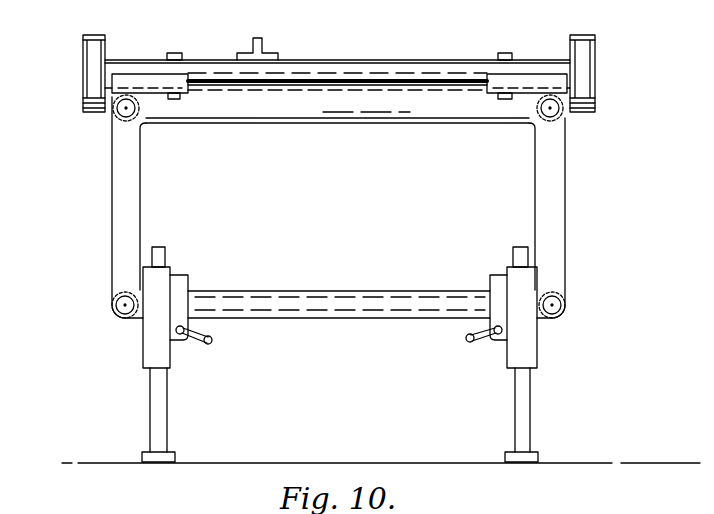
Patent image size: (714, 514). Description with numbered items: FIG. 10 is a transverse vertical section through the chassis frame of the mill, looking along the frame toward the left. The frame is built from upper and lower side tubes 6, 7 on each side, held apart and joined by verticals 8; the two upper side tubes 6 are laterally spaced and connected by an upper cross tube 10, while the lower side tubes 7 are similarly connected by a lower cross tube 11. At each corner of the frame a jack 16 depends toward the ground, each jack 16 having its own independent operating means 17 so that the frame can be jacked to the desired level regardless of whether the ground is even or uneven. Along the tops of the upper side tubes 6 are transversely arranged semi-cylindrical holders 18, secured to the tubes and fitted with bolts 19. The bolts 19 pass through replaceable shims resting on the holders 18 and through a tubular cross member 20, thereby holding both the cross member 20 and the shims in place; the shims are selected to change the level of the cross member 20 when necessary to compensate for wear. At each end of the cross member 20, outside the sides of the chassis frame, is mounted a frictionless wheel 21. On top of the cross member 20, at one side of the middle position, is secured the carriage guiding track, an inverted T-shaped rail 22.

The upper side tube 6 is at (127, 121).
The lower side tube 7 is at (122, 287).
The vertical 8 is at (567, 198).
The cross tube 10 is at (357, 126).
The cross tube 11 is at (377, 291).
The jack 16 is at (140, 361).
The independent operating means 17 is at (210, 344).
The semi-cylindrical holder 18 is at (148, 80).
The bolt 19 is at (176, 55).
The tubular cross member 20 is at (458, 62).
The frictionless wheel 21 is at (84, 37).
The inverted T-shaped rail 22 is at (266, 44).